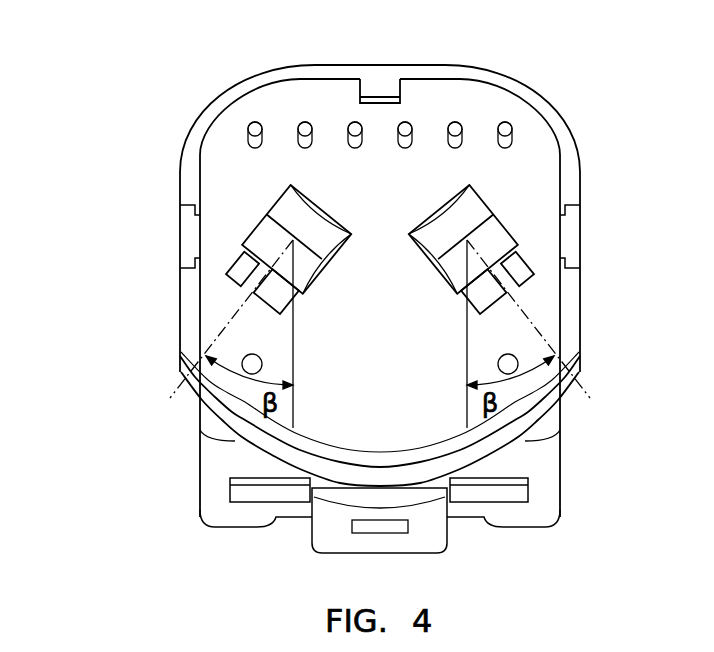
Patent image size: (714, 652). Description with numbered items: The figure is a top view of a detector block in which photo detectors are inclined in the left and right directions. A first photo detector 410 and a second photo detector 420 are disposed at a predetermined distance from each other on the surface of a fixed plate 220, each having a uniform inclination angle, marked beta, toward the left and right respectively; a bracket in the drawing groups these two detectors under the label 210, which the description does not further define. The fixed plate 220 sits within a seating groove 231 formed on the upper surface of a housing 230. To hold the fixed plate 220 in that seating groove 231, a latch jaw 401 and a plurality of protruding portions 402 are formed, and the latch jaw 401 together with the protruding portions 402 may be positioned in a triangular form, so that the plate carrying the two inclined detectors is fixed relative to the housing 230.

The camera module 210 is at (193, 233).
The fixed plate 220 is at (430, 165).
The housing 230 is at (542, 113).
The seating groove 231 is at (572, 234).
The latch jaw 401 is at (377, 97).
The protruding portions 402 is at (248, 371).
The first photo detector 410 is at (283, 215).
The second photo detector 420 is at (290, 190).